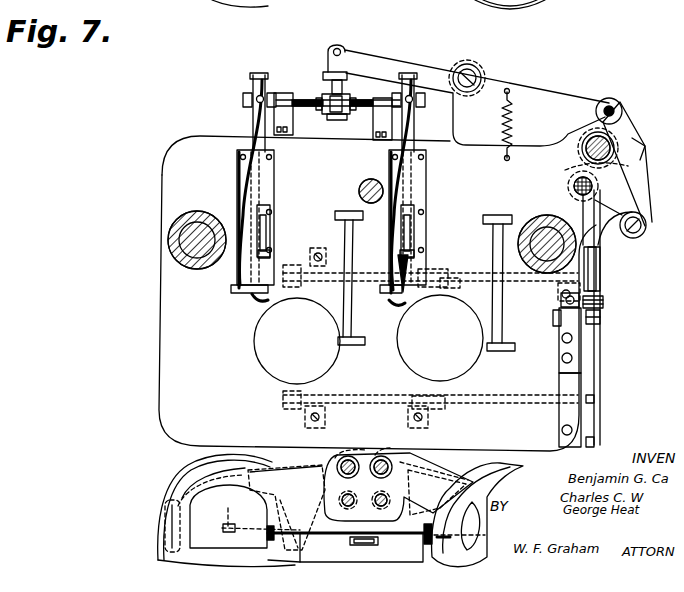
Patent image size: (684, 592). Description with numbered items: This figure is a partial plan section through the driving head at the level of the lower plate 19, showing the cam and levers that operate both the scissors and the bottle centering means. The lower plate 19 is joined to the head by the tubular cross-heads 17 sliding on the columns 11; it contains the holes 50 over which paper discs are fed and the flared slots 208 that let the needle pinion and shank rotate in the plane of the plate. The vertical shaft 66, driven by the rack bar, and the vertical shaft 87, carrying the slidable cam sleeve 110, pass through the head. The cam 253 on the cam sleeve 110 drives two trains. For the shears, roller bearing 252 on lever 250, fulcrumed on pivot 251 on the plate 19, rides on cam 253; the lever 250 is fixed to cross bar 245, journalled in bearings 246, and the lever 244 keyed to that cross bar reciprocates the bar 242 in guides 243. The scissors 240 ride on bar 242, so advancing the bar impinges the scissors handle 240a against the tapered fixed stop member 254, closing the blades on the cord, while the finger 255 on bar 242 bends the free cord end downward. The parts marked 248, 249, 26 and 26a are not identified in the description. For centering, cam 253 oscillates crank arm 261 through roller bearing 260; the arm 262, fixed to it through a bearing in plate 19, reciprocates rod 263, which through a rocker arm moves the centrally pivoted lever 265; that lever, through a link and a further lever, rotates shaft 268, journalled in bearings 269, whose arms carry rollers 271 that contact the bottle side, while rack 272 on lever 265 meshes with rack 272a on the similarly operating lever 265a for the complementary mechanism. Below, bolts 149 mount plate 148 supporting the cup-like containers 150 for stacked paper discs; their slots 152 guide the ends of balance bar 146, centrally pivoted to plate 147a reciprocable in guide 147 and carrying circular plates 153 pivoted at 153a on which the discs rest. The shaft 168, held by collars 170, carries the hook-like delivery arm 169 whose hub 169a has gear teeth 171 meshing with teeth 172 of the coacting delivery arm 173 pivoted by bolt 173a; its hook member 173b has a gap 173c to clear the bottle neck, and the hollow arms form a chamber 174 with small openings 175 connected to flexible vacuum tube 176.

The lower plate 19 is at (159, 337).
The tubular cross-heads 17 is at (204, 214).
The columns 11 is at (180, 237).
The opening 50 is at (368, 339).
The vertically disposed shaft 66 is at (361, 185).
The flared slot 208 is at (344, 236).
The shaft 268 is at (485, 274).
The bearings 269 is at (313, 283).
The rollers 271 is at (284, 286).
The bar 242 is at (424, 129).
The lever 244 is at (257, 75).
The cross bar 245 is at (305, 100).
The bearings 246 is at (282, 93).
The center block 248 is at (330, 118).
The connecting link 249 is at (346, 88).
The lever 250 is at (403, 35).
The pivot 251 is at (472, 66).
The roller bearing 252 is at (607, 100).
The cam sleeve 110 is at (606, 138).
The vertically disposed shaft 87 is at (612, 143).
The cam 253 is at (646, 148).
The crank arm 261 is at (628, 165).
The roller bearing 260 is at (573, 180).
The oscillating arm 262 is at (645, 220).
The rod 263 is at (608, 229).
The centrally pivoted lever 265 is at (600, 268).
The nut 26a is at (603, 301).
The nut 26 is at (603, 318).
The rack 272 is at (582, 338).
The rack 272a is at (582, 353).
The lever 265a is at (592, 397).
The guides 243 is at (262, 180).
The scissors handle 240a is at (262, 208).
The shears 240 is at (262, 236).
The fixed stop member 254 is at (262, 252).
The finger 255 is at (250, 299).
The cup-like container 150 is at (165, 488).
The circular plate 153 is at (335, 517).
The pivot 153a is at (261, 515).
The hook-shaped member 173b is at (164, 542).
The chamber 174 is at (215, 10).
The small openings 175 is at (162, 528).
The gap 173c is at (190, 476).
The delivery arm 173 is at (286, 507).
The bolt 173a is at (286, 475).
The flexible vacuum tube 176 is at (436, 462).
The vertically disposed shaft 168 is at (398, 460).
The paper disc delivery arm 169 is at (437, 492).
The gear teeth 172 is at (350, 455).
The gear teeth 171 is at (366, 455).
The collars 170 is at (381, 455).
The hub portion 169a is at (376, 445).
The bolts 149 is at (340, 507).
The balance bar 146 is at (410, 545).
The slots 152 is at (298, 535).
The guide 147 is at (355, 546).
The plate 147a is at (365, 548).
The plate 148 is at (328, 561).